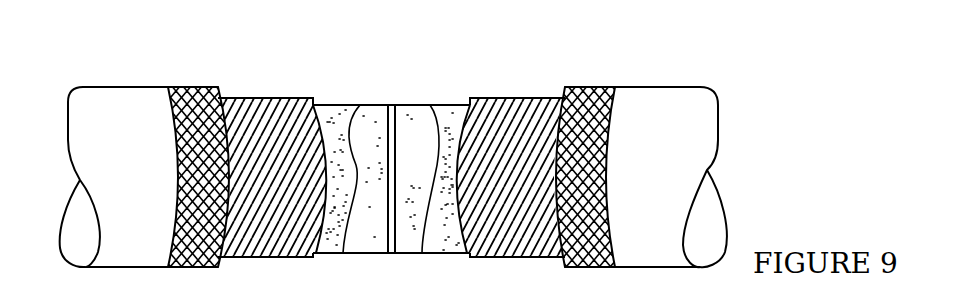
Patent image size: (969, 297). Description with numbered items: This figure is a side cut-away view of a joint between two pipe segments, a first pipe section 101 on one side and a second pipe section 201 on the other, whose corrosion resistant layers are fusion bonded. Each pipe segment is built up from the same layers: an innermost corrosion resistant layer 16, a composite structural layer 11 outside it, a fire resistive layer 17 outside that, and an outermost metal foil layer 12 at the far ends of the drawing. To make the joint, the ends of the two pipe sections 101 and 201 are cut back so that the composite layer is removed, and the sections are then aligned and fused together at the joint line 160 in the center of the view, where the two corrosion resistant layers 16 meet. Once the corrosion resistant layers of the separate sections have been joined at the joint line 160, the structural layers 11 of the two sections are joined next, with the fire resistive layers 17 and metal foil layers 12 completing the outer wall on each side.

The metal foil layer 12 is at (104, 87).
The fire resistive layer 17 is at (181, 86).
The composite structural layer 11 is at (250, 96).
The corrosion resistant layer 16 is at (330, 116).
The joint line 160 is at (412, 112).
The pipe section 101 is at (114, 177).
The pipe section 201 is at (671, 177).